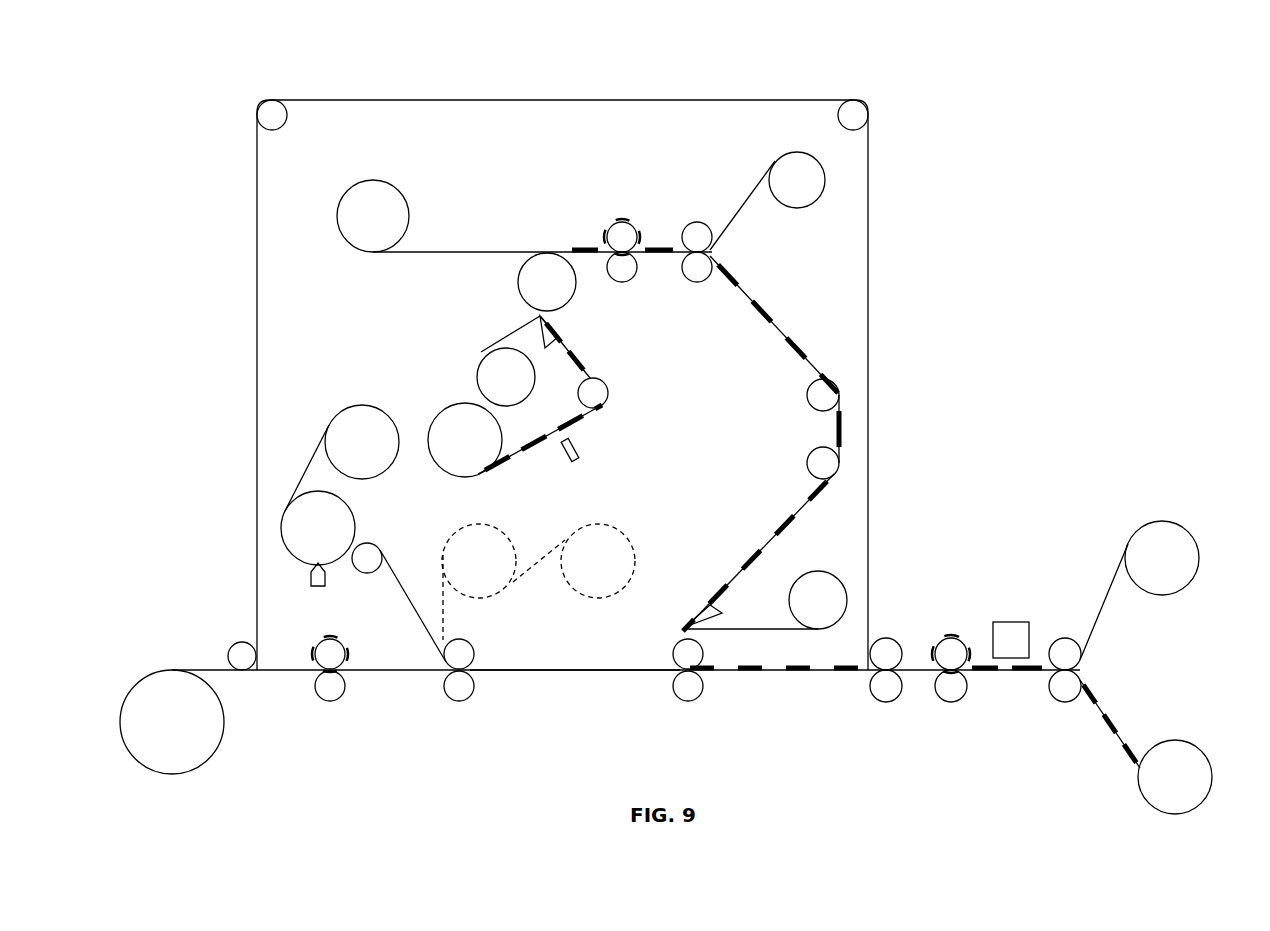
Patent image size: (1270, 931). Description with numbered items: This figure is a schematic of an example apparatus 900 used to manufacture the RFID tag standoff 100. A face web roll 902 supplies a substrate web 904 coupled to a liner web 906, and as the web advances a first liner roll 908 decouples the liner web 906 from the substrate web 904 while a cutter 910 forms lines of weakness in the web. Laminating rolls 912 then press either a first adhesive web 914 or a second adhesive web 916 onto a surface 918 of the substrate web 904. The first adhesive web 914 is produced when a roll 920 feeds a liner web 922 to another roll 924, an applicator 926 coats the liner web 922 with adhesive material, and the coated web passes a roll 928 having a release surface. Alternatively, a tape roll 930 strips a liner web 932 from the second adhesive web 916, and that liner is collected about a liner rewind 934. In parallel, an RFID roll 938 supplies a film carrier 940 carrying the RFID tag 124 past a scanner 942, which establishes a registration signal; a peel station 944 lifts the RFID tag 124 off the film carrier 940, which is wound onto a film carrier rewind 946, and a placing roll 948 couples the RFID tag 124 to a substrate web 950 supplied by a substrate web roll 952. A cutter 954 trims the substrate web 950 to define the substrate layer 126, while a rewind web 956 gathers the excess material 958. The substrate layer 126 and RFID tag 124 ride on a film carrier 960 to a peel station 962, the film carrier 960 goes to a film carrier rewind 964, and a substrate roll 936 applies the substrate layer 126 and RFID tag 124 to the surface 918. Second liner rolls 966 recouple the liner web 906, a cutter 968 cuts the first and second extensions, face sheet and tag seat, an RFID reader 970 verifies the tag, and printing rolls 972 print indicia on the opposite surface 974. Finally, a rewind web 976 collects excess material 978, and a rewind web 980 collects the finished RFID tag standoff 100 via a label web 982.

The apparatus 900 is at (220, 58).
The face web roll 902 is at (214, 760).
The substrate web 904 is at (293, 672).
The liner web 906 is at (256, 305).
The first liner roll 908 is at (238, 641).
The cutter 910 is at (337, 637).
The laminating rolls 912 is at (454, 703).
The first adhesive web 914 is at (392, 588).
The second adhesive web 916 is at (446, 605).
The surface 918 is at (594, 668).
The roll 920 is at (357, 405).
The liner web 922 is at (302, 468).
The roll 924 is at (352, 505).
The applicator 926 is at (318, 586).
The roll 928 is at (376, 553).
The tape roll 930 is at (478, 524).
The liner web 932 is at (537, 575).
The liner rewind 934 is at (600, 524).
The substrate roll 936 is at (703, 696).
The RFID roll 938 is at (463, 404).
The film carrier 940 is at (497, 337).
The scanner 942 is at (580, 452).
The peel station 944 is at (535, 322).
The film carrier rewind 946 is at (478, 365).
The placing roll 948 is at (576, 299).
The substrate web 950 is at (466, 251).
The substrate web roll 952 is at (373, 180).
The cutter 954 is at (617, 219).
The rewind web 956 is at (800, 208).
The excess material 958 is at (730, 212).
The film carrier 960 is at (762, 300).
The peel station 962 is at (712, 620).
The film carrier rewind 964 is at (825, 572).
The second liner rolls 966 is at (887, 704).
The cutter 968 is at (948, 635).
The RFID reader 970 is at (1011, 620).
The printing rolls 972 is at (1063, 704).
The surface 974 is at (1007, 672).
The rewind web 976 is at (1164, 521).
The excess material 978 is at (1102, 598).
The rewind web 980 is at (1173, 740).
The label web 982 is at (1108, 742).
The RFID tag standoff 100 is at (982, 672).
The RFID tag 124 is at (586, 250).
The substrate layer 126 is at (636, 272).